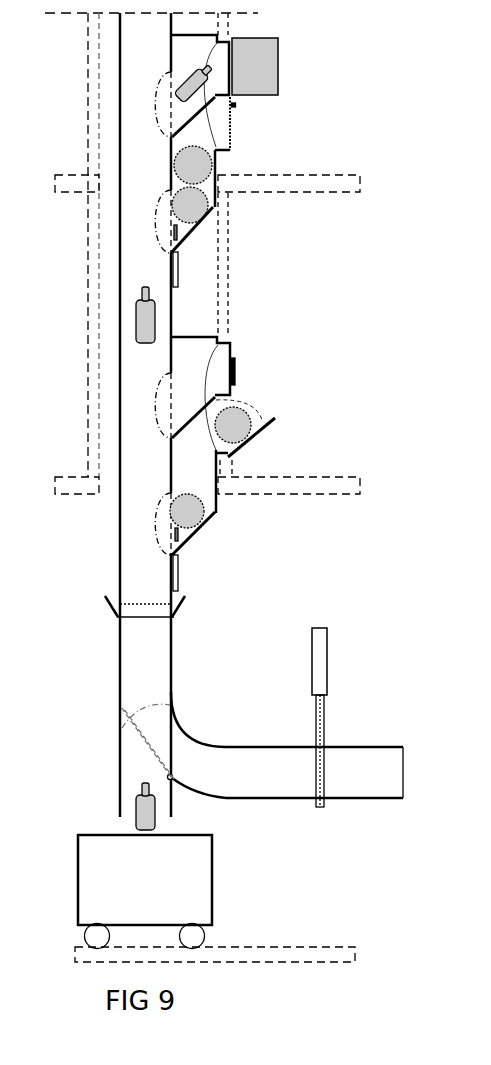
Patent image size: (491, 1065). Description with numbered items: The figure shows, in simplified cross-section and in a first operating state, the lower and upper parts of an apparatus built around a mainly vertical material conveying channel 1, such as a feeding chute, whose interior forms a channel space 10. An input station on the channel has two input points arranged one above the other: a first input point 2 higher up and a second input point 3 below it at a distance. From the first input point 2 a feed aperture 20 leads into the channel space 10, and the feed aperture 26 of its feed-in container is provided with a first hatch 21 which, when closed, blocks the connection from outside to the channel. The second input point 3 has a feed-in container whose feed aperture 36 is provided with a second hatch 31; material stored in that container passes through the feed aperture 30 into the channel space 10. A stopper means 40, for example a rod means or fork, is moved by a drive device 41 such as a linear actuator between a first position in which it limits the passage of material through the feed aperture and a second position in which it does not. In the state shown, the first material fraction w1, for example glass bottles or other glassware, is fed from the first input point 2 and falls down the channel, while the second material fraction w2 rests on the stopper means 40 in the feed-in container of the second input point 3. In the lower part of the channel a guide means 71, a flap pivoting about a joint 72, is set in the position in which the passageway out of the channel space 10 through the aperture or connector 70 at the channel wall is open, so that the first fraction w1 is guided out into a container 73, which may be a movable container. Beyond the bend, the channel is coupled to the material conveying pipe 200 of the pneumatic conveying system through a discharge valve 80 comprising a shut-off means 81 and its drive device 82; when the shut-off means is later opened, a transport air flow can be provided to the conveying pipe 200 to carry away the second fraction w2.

The material conveying channel 1 is at (125, 415).
The channel space 10 is at (133, 571).
The first input point 2 is at (249, 319).
The feed aperture of the first input point 20 is at (184, 100).
The first hatch 21 is at (272, 82).
The feed aperture of the feed-in container 26 is at (226, 62).
The second input point 3 is at (273, 285).
The second hatch 31 is at (240, 141).
The feed aperture of the second input point 30 is at (170, 205).
The feed aperture of the feed-in container 36 is at (222, 418).
The stopper means 40 is at (180, 236).
The drive device 41 is at (178, 268).
The first material fraction w1 is at (182, 103).
The second material fraction w2 is at (213, 212).
The aperture or connector 70 is at (116, 763).
The guide means 71 is at (175, 738).
The joint 72 is at (178, 785).
The container 73 is at (85, 862).
The discharge valve 80 is at (314, 715).
The shut-off means 81 is at (315, 769).
The drive device 82 is at (318, 667).
The material conveying pipe 200 is at (400, 770).